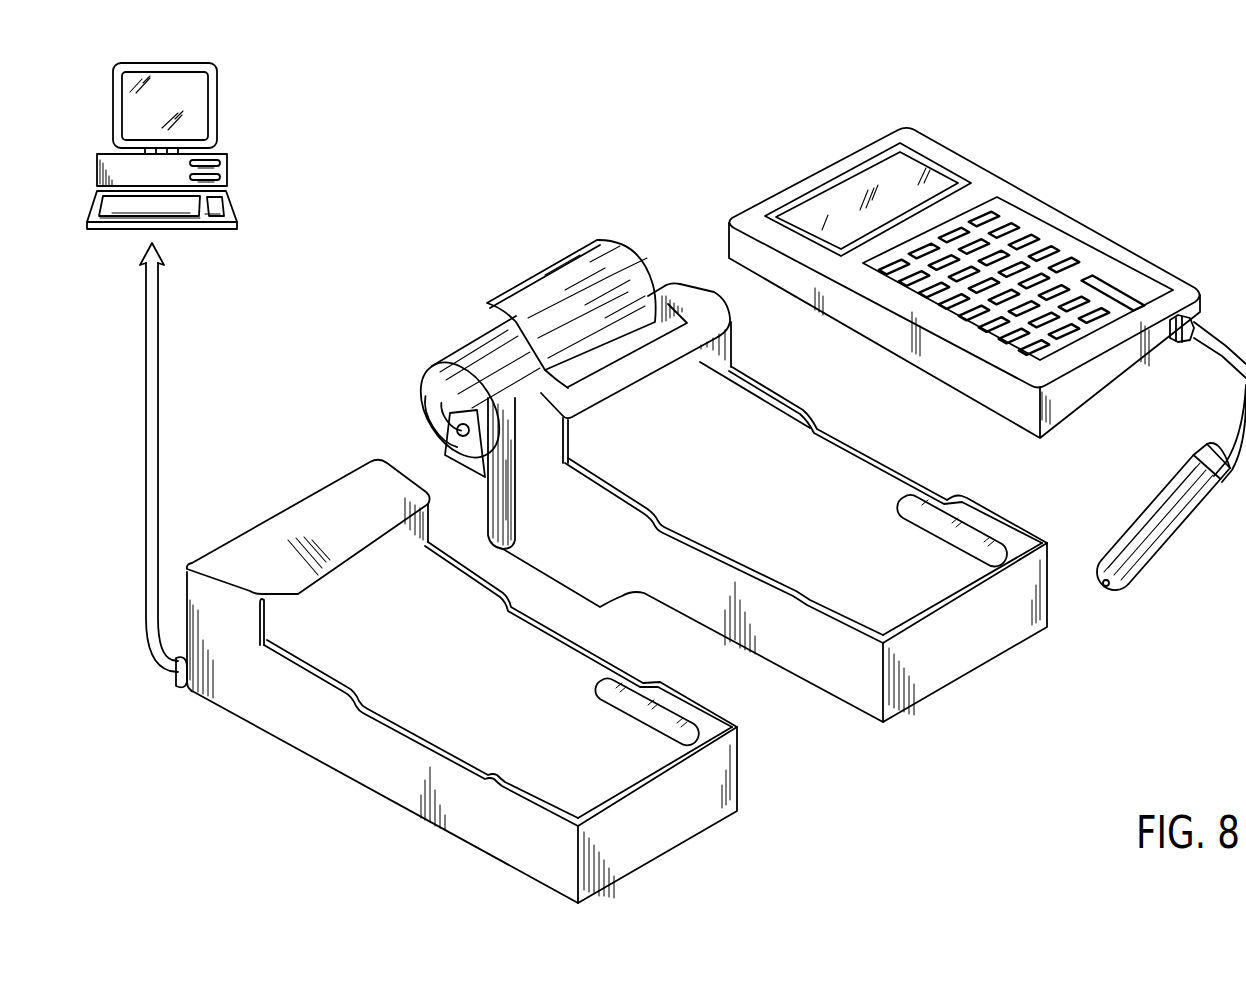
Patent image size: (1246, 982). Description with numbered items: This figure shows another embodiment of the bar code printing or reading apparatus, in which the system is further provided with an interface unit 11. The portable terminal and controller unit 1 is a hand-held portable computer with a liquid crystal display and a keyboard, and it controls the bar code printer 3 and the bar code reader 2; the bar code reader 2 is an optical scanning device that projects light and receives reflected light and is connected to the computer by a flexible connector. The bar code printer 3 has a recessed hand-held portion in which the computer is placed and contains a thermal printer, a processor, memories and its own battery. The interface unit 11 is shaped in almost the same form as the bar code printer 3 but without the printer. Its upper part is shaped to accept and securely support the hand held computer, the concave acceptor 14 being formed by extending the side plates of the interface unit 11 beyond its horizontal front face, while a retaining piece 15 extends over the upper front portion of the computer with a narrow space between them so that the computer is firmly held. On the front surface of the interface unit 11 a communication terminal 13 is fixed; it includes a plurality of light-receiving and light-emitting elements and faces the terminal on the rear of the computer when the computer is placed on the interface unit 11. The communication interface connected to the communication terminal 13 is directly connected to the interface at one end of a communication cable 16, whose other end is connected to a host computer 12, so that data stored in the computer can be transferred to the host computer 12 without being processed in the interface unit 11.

The portable terminal and controller unit 1 is at (1093, 222).
The bar code reader 2 is at (1176, 565).
The bar code printer 3 is at (921, 712).
The interface unit 11 is at (462, 681).
The host computer 12 is at (250, 161).
The communication terminal 13 is at (625, 696).
The concave acceptor 14 is at (352, 683).
The retaining piece 15 is at (302, 520).
The communication cable 16 is at (159, 357).